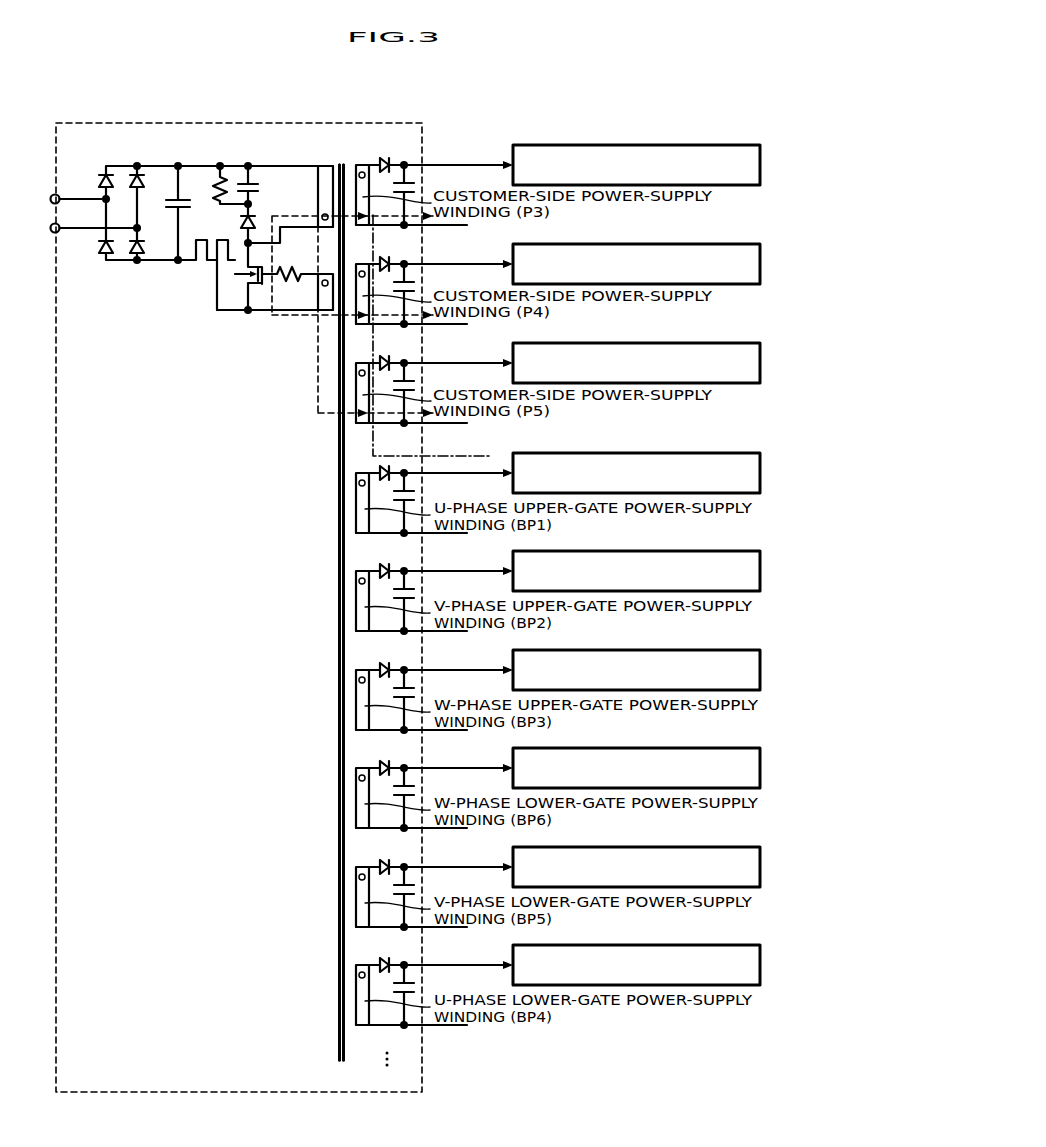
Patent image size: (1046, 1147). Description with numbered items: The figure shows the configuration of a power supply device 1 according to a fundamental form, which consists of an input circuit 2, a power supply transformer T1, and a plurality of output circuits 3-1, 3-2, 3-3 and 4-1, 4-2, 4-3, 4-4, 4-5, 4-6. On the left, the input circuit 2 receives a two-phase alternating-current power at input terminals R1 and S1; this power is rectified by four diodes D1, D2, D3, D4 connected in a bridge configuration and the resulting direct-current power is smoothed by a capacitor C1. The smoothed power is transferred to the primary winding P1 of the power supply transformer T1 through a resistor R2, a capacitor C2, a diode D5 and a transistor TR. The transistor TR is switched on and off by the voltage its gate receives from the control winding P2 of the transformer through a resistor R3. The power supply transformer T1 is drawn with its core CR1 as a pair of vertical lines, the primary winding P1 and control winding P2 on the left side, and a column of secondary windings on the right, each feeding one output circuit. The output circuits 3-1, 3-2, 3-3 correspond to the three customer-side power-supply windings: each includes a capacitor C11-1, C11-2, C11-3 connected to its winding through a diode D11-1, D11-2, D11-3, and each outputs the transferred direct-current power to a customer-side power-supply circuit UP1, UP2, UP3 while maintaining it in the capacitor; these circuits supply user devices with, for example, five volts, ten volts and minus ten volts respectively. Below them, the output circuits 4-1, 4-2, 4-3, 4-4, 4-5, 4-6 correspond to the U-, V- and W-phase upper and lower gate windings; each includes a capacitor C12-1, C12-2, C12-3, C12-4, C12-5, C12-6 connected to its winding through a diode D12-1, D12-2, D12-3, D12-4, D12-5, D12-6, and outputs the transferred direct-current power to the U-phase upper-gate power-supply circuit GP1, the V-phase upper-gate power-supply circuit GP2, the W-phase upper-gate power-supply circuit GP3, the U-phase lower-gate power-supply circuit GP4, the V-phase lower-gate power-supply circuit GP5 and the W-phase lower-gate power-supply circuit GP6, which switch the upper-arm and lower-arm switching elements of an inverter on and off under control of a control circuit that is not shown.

The power supply device 1 is at (139, 122).
The input circuit 2 is at (119, 283).
The output circuit 3-1 is at (434, 146).
The output circuit 3-2 is at (434, 286).
The output circuit 3-3 is at (434, 385).
The output circuit 4-1 is at (434, 486).
The output circuit 4-2 is at (434, 584).
The output circuit 4-3 is at (434, 683).
The output circuit 4-4 is at (434, 978).
The output circuit 4-5 is at (434, 880).
The output circuit 4-6 is at (434, 781).
The power supply transformer T1 is at (340, 157).
The core CR1 is at (338, 1046).
The input terminal R1 is at (70, 199).
The input terminal S1 is at (86, 228).
The diode D1 is at (97, 182).
The diode D2 is at (103, 258).
The diode D3 is at (146, 180).
The diode D4 is at (140, 258).
The diode D5 is at (240, 222).
The capacitor C1 is at (172, 208).
The capacitor C2 is at (259, 191).
The resistor R2 is at (215, 180).
The resistor R3 is at (295, 279).
The transistor TR is at (245, 279).
The primary winding P1 is at (318, 206).
The control winding P2 is at (318, 304).
The diode D11-1 is at (381, 133).
The diode D11-2 is at (322, 309).
The diode D11-3 is at (320, 375).
The capacitor C11-1 is at (438, 182).
The capacitor C11-2 is at (438, 281).
The capacitor C11-3 is at (438, 380).
The diode D12-1 is at (329, 467).
The diode D12-2 is at (329, 565).
The diode D12-3 is at (329, 664).
The diode D12-4 is at (329, 959).
The diode D12-5 is at (329, 861).
The diode D12-6 is at (329, 762).
The capacitor C12-1 is at (438, 490).
The capacitor C12-2 is at (438, 588).
The capacitor C12-3 is at (438, 687).
The capacitor C12-4 is at (438, 982).
The capacitor C12-5 is at (438, 884).
The capacitor C12-6 is at (438, 785).
The customer-side power-supply circuit UP1 is at (636, 155).
The customer-side power-supply circuit UP2 is at (636, 254).
The customer-side power-supply circuit UP3 is at (636, 353).
The U-phase upper-gate power-supply circuit GP1 is at (636, 463).
The V-phase upper-gate power-supply circuit GP2 is at (636, 561).
The W-phase upper-gate power-supply circuit GP3 is at (636, 660).
The U-phase lower-gate power-supply circuit GP4 is at (636, 955).
The V-phase lower-gate power-supply circuit GP5 is at (636, 857).
The W-phase lower-gate power-supply circuit GP6 is at (636, 758).